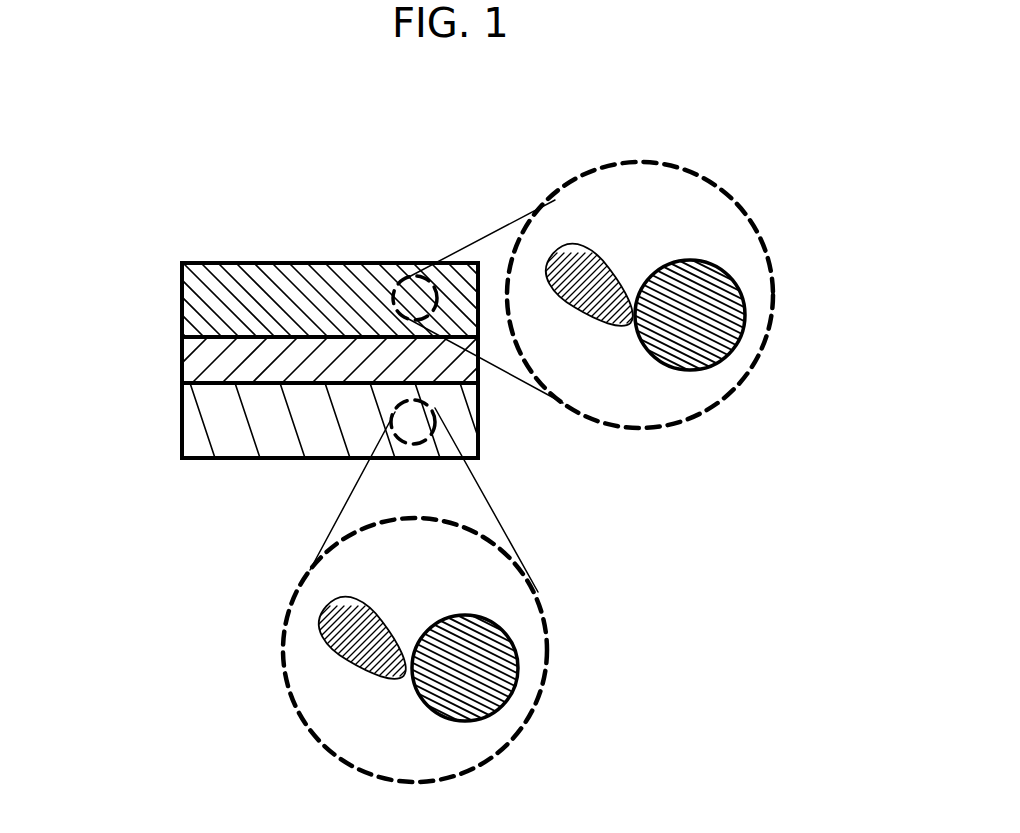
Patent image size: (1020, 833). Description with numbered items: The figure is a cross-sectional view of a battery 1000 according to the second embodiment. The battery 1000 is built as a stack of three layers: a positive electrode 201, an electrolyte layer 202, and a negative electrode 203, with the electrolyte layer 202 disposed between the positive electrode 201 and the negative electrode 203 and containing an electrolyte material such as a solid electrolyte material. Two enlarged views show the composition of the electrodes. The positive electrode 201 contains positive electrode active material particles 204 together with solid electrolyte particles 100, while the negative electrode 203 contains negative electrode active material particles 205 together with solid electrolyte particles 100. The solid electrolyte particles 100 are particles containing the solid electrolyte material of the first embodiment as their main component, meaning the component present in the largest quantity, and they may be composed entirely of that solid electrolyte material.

The battery 1000 is at (370, 210).
The positive electrode 201 is at (218, 285).
The electrolyte layer 202 is at (218, 357).
The negative electrode 203 is at (218, 422).
The solid electrolyte particles 100 is at (608, 307).
The positive electrode active material particles 204 is at (708, 315).
The negative electrode active material particles 205 is at (483, 663).